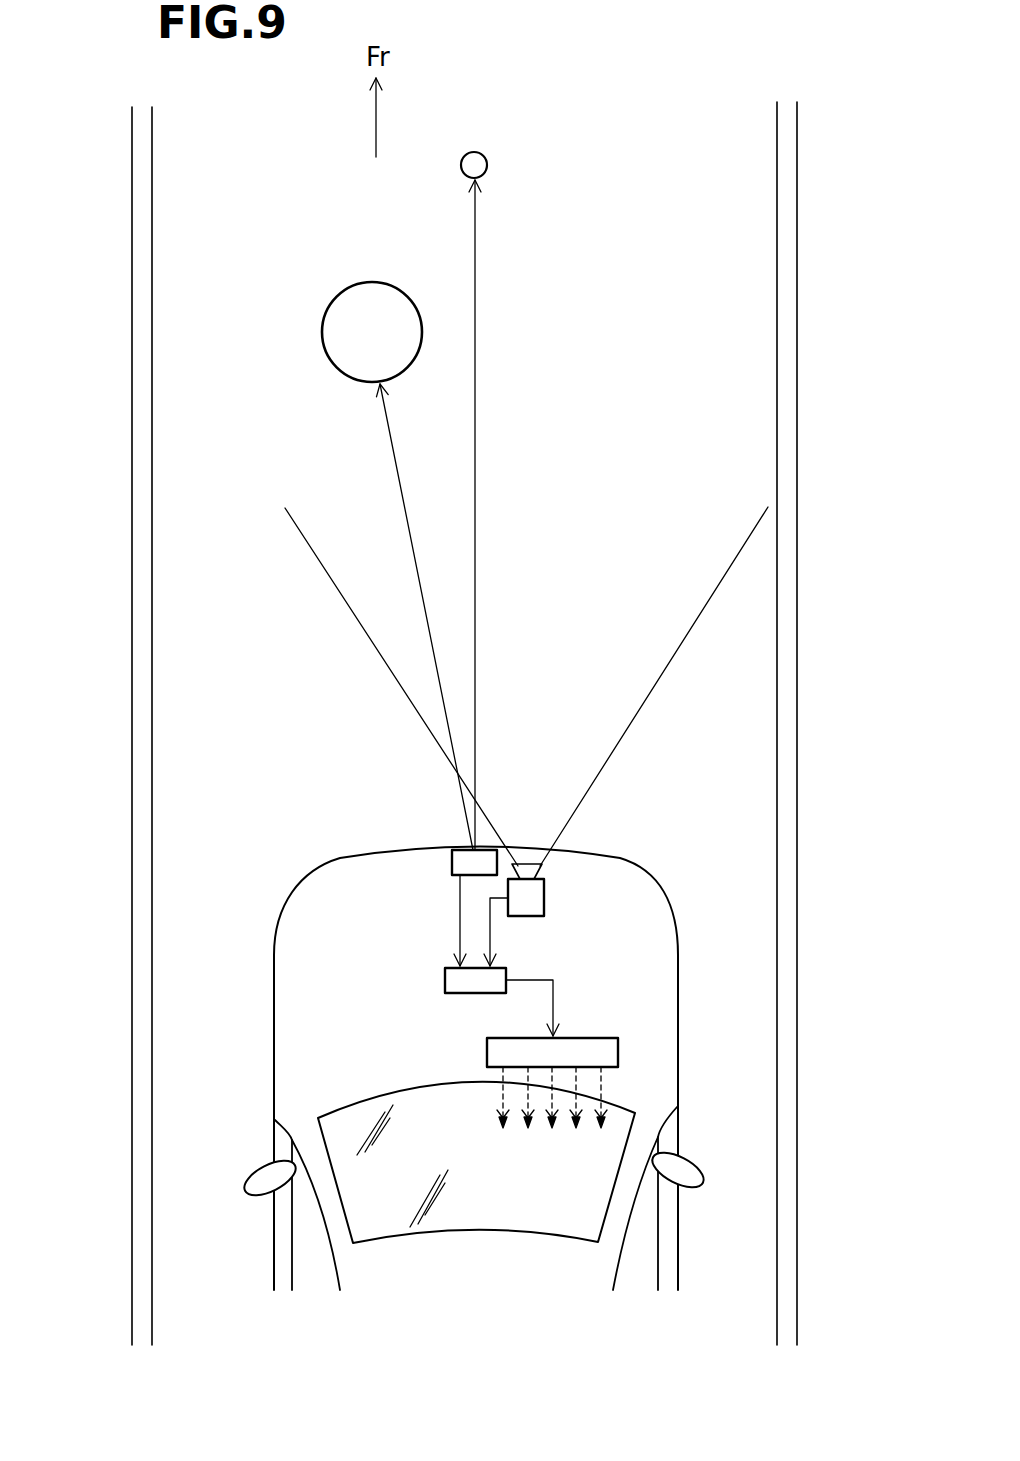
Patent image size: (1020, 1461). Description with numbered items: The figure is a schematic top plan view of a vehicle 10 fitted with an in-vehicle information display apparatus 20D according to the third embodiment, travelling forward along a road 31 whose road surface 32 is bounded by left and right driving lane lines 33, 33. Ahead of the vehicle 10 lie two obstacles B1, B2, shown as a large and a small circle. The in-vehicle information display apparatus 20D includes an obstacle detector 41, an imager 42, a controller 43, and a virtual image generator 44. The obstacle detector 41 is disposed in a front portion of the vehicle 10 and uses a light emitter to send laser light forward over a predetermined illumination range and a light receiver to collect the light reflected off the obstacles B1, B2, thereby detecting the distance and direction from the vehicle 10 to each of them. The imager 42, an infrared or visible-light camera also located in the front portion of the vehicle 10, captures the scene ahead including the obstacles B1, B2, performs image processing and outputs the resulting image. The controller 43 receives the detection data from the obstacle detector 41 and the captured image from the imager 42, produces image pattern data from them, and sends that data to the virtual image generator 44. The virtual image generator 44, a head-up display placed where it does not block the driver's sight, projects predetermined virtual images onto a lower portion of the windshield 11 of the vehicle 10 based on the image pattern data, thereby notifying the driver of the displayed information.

The vehicle 10 is at (273, 1000).
The windshield 11 is at (350, 1127).
The in-vehicle information display apparatus 20D is at (632, 957).
The road 31 is at (631, 183).
The road surface 32 is at (715, 207).
The driving lane line 33 is at (133, 192).
The obstacle detector 41 is at (452, 862).
The imager 42 is at (538, 898).
The controller 43 is at (445, 982).
The virtual image generator 44 is at (590, 1045).
The obstacle B1 is at (369, 304).
The obstacle B2 is at (485, 154).